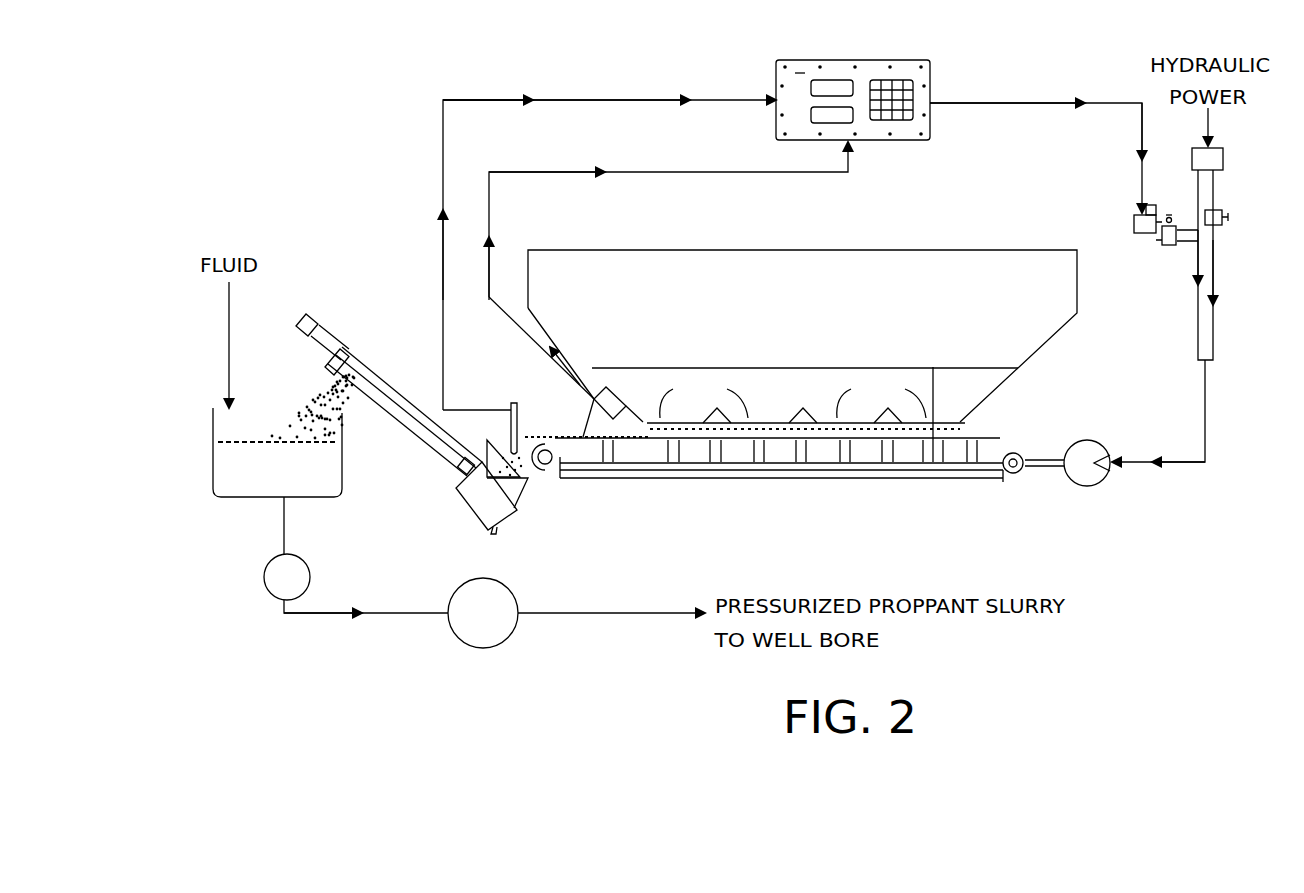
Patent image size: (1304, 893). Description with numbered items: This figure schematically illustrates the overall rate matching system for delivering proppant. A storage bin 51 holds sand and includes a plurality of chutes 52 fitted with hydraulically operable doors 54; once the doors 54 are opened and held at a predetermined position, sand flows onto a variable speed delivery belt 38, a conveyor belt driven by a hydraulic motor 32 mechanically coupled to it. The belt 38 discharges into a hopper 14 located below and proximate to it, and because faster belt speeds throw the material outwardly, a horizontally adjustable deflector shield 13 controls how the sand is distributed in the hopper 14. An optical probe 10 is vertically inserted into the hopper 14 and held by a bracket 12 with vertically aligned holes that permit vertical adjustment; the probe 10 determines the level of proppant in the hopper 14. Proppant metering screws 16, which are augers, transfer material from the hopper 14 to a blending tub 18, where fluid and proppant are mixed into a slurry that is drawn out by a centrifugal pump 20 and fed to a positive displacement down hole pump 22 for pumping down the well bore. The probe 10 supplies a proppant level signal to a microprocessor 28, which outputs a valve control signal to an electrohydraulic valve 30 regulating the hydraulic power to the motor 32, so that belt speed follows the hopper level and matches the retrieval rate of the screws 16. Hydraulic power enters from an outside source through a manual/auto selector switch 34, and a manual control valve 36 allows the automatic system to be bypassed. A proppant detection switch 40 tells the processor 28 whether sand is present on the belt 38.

The optical probe 10 is at (493, 437).
The bracket 12 is at (520, 414).
The deflector shield 13 is at (462, 467).
The hopper 14 is at (513, 489).
The proppant metering screws 16 is at (413, 447).
The blending tub 18 is at (213, 468).
The centrifugal pump 20 is at (264, 578).
The positive displacement down hole pump 22 is at (477, 649).
The microprocessor 28 is at (786, 66).
The electrohydraulic valve 30 is at (1134, 218).
The hydraulic motor 32 is at (1090, 440).
The manual/auto selector switch 34 is at (1224, 160).
The manual control valve 36 is at (1222, 226).
The variable speed delivery belt 38 is at (1006, 446).
The proppant detection switch 40 is at (612, 396).
The storage bin 51 is at (1080, 300).
The chutes 52 is at (793, 402).
The hydraulically operable doors 54 is at (933, 401).